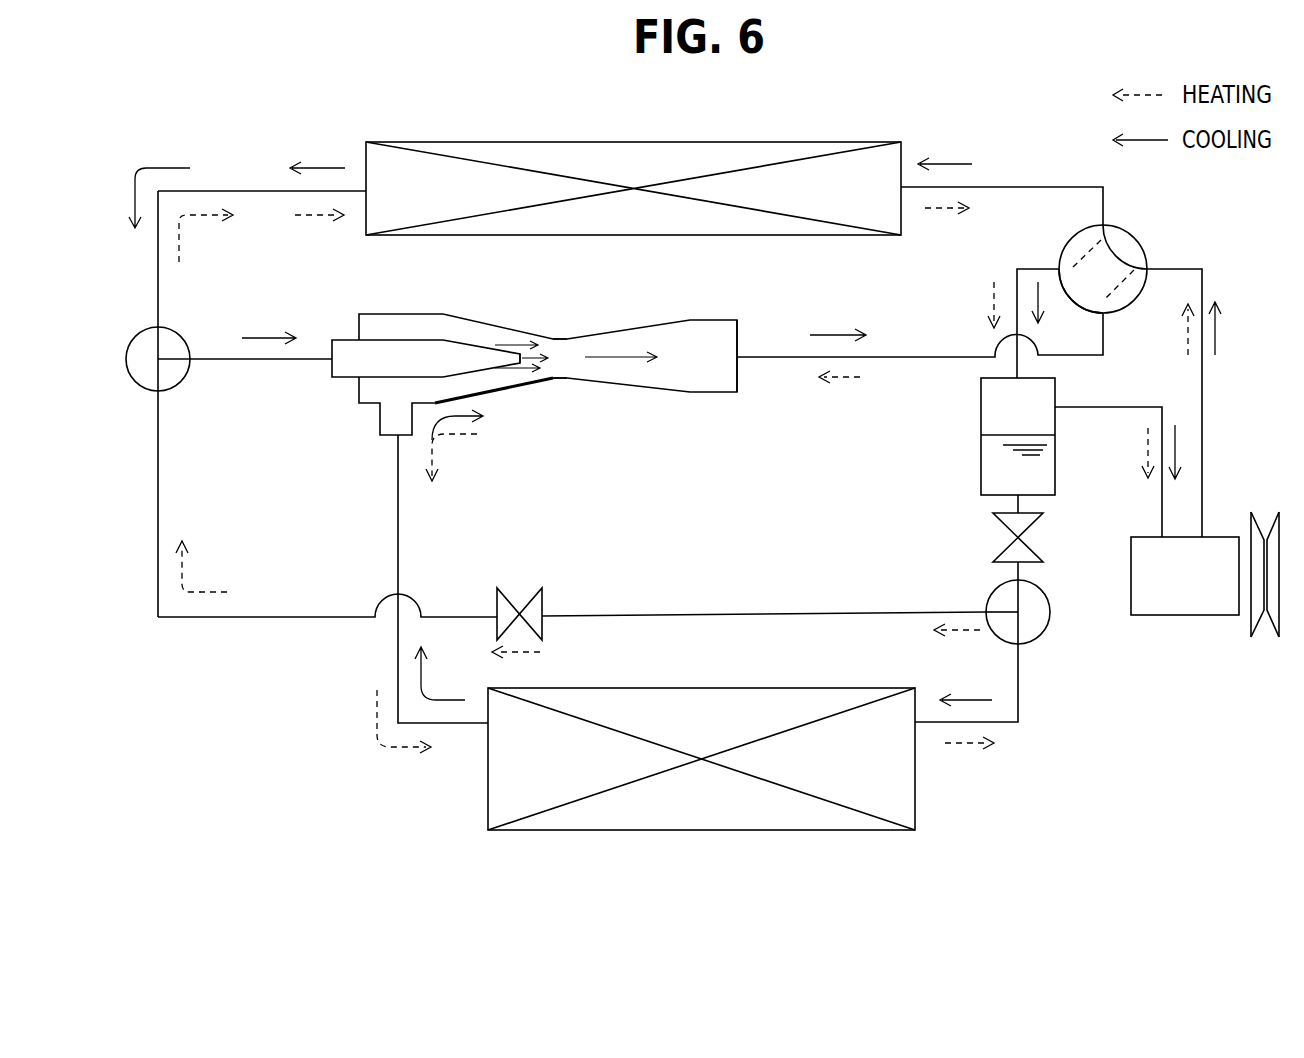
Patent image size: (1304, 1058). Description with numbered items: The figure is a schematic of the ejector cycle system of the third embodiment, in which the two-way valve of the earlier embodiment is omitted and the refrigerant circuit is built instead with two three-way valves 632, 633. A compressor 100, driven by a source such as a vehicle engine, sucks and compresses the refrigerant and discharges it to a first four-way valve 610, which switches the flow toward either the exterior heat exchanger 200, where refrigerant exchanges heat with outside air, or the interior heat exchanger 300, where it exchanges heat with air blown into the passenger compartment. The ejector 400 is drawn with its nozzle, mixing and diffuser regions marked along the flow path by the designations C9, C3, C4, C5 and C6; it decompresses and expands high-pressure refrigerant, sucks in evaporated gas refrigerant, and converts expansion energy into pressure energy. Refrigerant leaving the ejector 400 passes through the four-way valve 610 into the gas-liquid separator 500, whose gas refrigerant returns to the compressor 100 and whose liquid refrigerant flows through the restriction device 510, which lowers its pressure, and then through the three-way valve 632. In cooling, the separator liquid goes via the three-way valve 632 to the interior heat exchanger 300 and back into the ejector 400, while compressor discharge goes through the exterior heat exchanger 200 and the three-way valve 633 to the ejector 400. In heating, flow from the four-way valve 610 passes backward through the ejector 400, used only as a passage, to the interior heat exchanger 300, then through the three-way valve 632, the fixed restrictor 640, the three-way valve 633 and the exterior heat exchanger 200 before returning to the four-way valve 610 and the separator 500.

The compressor 100 is at (1155, 615).
The exterior heat exchanger 200 is at (823, 142).
The interior heat exchanger 300 is at (848, 830).
The ejector 400 is at (628, 330).
The gas-liquid separator 500 is at (981, 465).
The restriction device 510 is at (995, 529).
The first four-way valve 610 is at (1140, 238).
The three-way valve 632 is at (992, 594).
The three-way valve 633 is at (173, 330).
The fixed restrictor 640 is at (512, 597).
The suction passage of ejector C9 is at (477, 378).
The nozzle outlet C3 is at (527, 370).
The mixing portion C4 is at (562, 358).
The diffuser portion C5 is at (628, 367).
The ejector outlet C6 is at (738, 368).